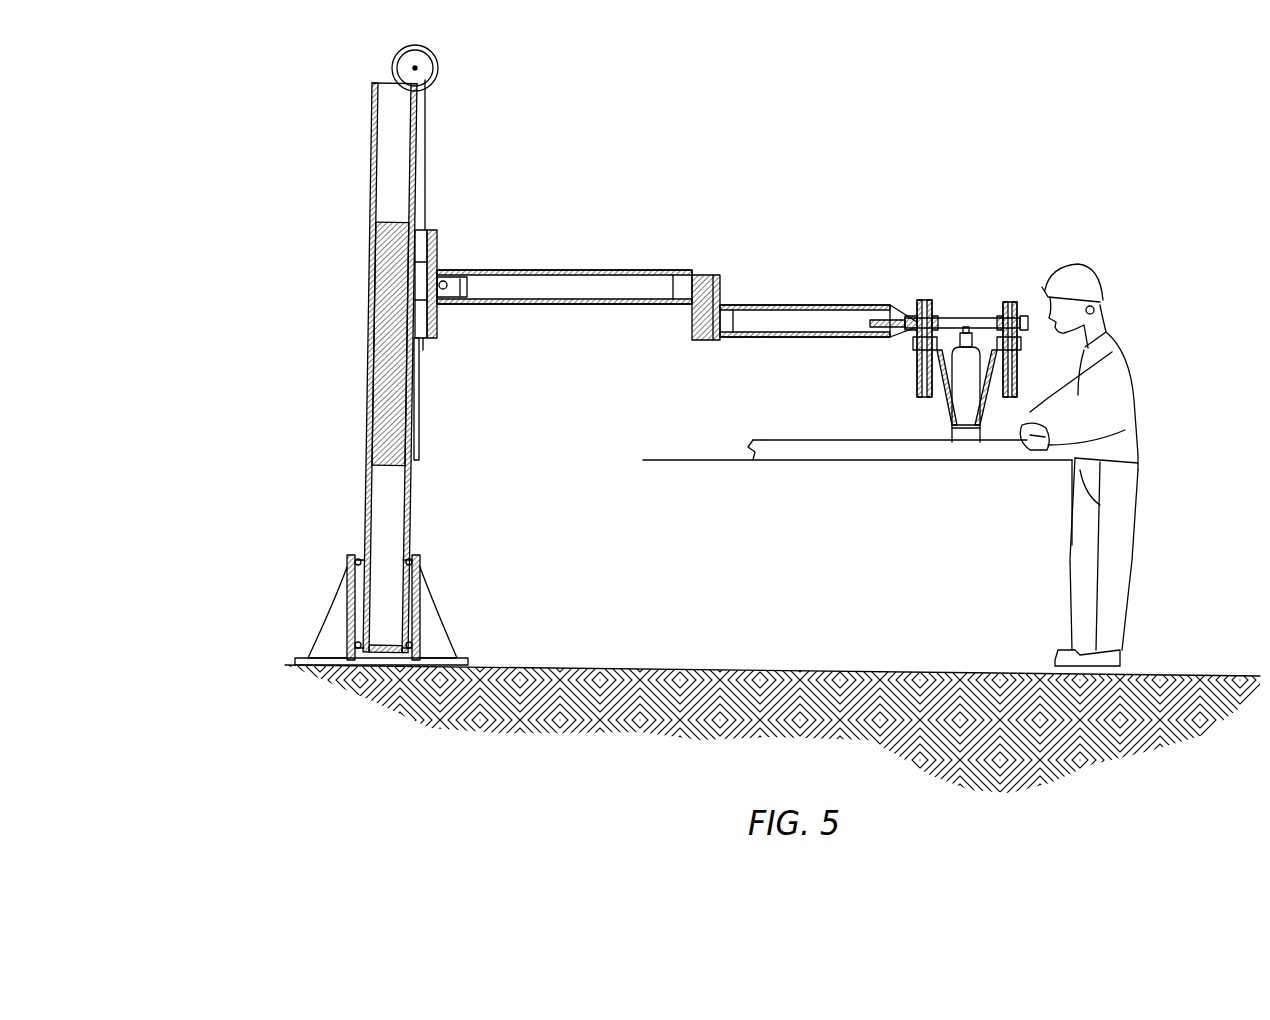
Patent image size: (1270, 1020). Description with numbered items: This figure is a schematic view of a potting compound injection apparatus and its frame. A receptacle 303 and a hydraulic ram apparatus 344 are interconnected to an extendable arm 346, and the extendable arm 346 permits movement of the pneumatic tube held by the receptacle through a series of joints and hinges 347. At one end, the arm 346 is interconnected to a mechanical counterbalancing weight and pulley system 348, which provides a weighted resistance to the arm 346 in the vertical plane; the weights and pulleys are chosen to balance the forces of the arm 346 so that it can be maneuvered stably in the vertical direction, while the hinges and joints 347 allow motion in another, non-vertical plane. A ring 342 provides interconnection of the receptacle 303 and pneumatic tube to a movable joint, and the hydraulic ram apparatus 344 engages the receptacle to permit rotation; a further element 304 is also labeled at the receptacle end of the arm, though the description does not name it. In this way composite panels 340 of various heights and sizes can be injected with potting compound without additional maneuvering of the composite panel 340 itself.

The mechanical counterbalancing weight and pulley system 348 is at (390, 55).
The extendable arm 346 is at (627, 270).
The joints and hinges 347 is at (692, 343).
The shaft 304 is at (968, 318).
The hydraulic ram apparatus 344 is at (1017, 286).
The receptacle 303 is at (972, 398).
The ring 342 is at (955, 428).
The composite panel 340 is at (780, 450).